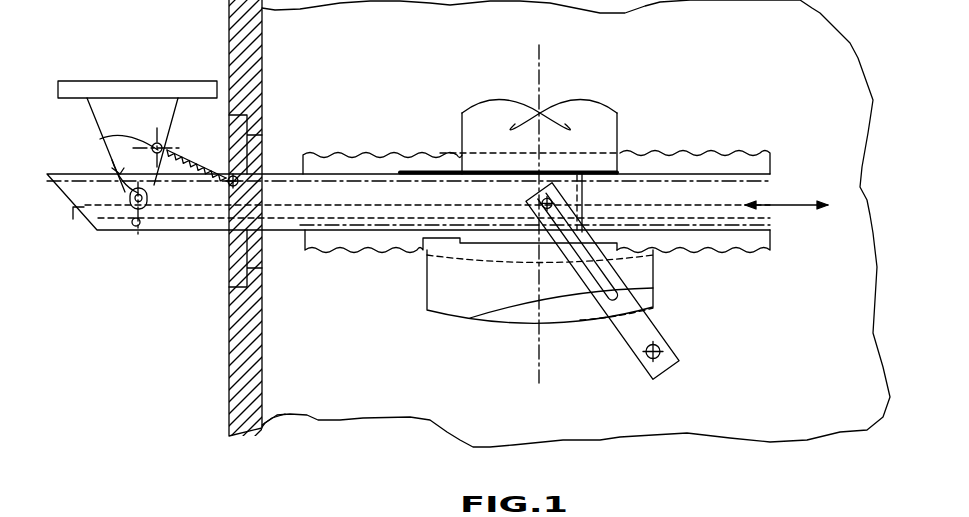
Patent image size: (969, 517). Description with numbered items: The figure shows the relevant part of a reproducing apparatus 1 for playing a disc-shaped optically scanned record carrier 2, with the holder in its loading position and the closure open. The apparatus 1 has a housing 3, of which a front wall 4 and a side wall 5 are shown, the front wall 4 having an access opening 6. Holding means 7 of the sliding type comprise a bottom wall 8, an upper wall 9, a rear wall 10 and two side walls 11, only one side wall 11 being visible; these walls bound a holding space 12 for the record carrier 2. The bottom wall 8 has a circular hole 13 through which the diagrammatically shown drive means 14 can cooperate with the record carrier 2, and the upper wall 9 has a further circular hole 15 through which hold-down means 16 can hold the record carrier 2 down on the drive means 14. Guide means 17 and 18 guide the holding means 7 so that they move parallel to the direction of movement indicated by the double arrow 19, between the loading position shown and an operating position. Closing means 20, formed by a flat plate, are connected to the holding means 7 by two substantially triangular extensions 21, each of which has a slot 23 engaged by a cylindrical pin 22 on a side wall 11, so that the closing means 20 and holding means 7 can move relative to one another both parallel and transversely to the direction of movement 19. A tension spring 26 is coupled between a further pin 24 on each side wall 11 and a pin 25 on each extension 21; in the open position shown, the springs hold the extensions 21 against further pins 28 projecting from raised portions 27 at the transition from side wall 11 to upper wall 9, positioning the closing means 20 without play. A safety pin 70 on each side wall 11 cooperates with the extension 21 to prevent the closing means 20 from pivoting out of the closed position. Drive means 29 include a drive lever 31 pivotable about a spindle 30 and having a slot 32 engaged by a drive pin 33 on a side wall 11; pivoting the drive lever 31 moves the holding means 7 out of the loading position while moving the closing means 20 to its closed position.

The reproducing apparatus 1 is at (401, 453).
The record carrier 2 is at (81, 216).
The housing 3 is at (262, 428).
The front wall 4 is at (240, 355).
The side wall 5 is at (317, 418).
The access opening 6 is at (237, 279).
The holding means 7 is at (585, 211).
The bottom wall 8 is at (289, 230).
The upper wall 9 is at (292, 173).
The rear wall 10 is at (587, 188).
The side wall 11 is at (403, 197).
The holding space 12 is at (333, 197).
The circular hole 13 is at (447, 235).
The drive means 14 is at (478, 316).
The further circular hole 15 is at (277, 173).
The hold-down means 16 is at (571, 112).
The guide means 17 is at (640, 167).
The guide means 18 is at (700, 243).
The direction of movement 19 is at (790, 206).
The closing means 20 is at (133, 92).
The extension 21 is at (102, 110).
The cylindrical pin 22 is at (142, 198).
The slot 23 is at (118, 171).
The further pin 24 is at (238, 187).
The pin 25 is at (101, 139).
The tension spring 26 is at (212, 173).
The raised portion 27 is at (187, 167).
The further pin 28 is at (163, 165).
The drive means 29 is at (680, 338).
The spindle 30 is at (650, 354).
The drive lever 31 is at (634, 330).
The slot 32 is at (605, 300).
The drive pin 33 is at (538, 173).
The safety pin 70 is at (134, 226).